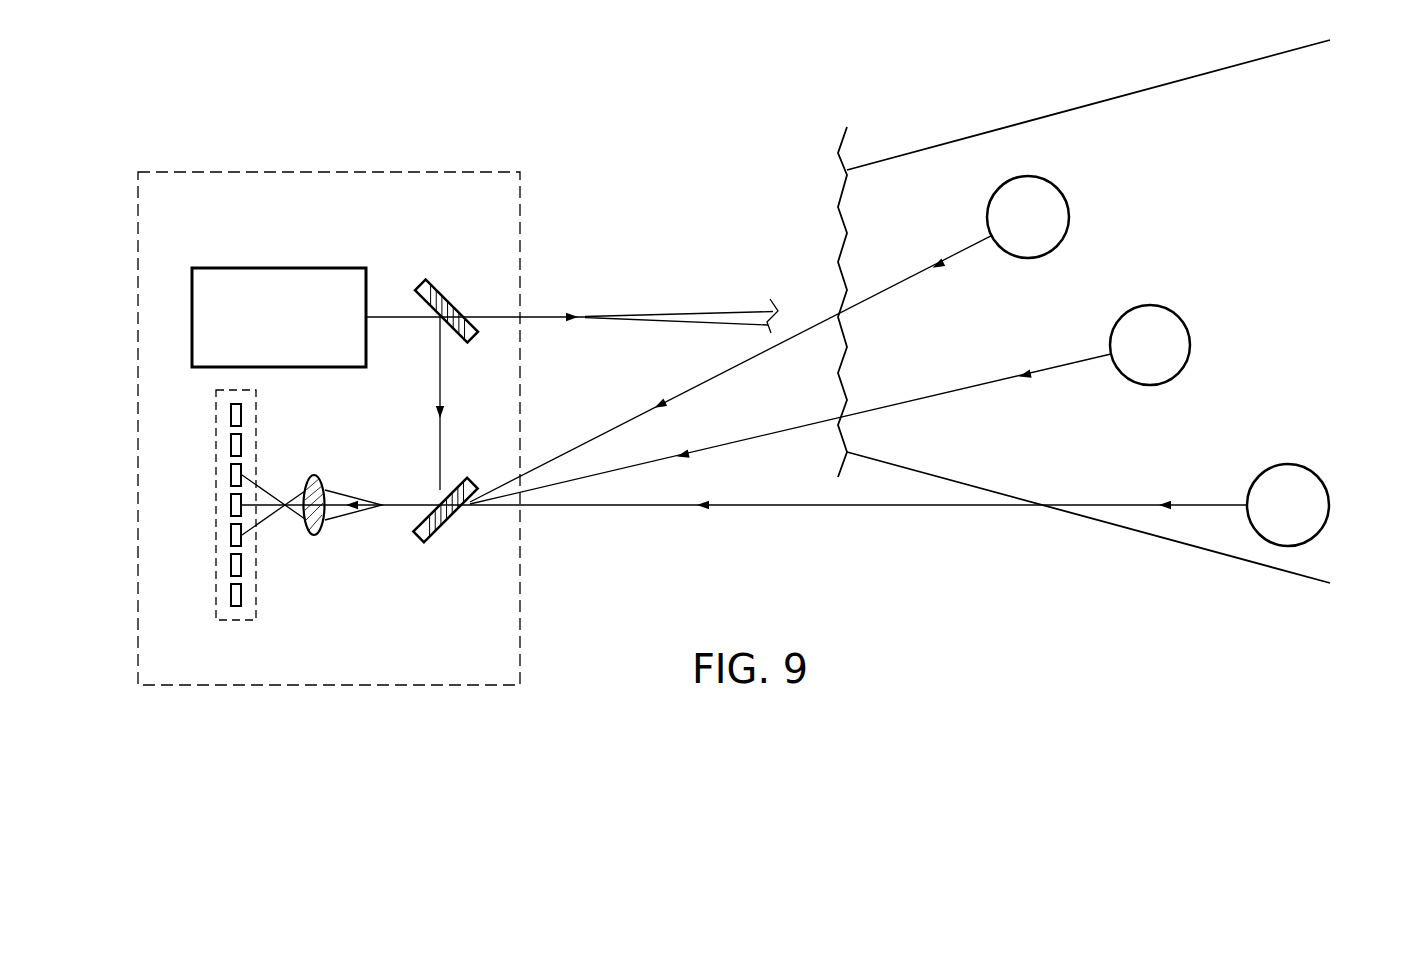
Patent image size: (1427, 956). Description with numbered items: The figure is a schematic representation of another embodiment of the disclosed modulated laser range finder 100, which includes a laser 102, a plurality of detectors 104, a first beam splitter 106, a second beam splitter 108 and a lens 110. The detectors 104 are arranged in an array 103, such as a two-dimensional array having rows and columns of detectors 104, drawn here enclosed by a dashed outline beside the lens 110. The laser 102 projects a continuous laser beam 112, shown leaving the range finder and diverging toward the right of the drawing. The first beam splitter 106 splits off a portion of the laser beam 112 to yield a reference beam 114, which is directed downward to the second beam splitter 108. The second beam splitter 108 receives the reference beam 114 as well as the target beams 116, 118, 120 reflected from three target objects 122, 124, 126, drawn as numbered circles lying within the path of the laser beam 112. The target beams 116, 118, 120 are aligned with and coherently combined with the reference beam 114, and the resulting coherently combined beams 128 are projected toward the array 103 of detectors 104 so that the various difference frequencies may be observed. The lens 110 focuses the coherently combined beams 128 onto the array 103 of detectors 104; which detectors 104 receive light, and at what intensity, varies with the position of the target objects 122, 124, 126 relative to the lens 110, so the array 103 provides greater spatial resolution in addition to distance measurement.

The modulated laser range finder 100 is at (277, 170).
The laser 102 is at (277, 268).
The array 103 is at (258, 405).
The detectors 104 is at (231, 415).
The first beam splitter 106 is at (441, 289).
The second beam splitter 108 is at (437, 533).
The lens 110 is at (317, 537).
The laser beam 112 is at (662, 312).
The reference beam 114 is at (440, 395).
The target beam 116 is at (903, 283).
The target beam 118 is at (983, 384).
The target beam 120 is at (1107, 503).
The target object 122 is at (1069, 220).
The target object 124 is at (1190, 345).
The target object 126 is at (1329, 505).
The coherently combined beams 128 is at (410, 503).